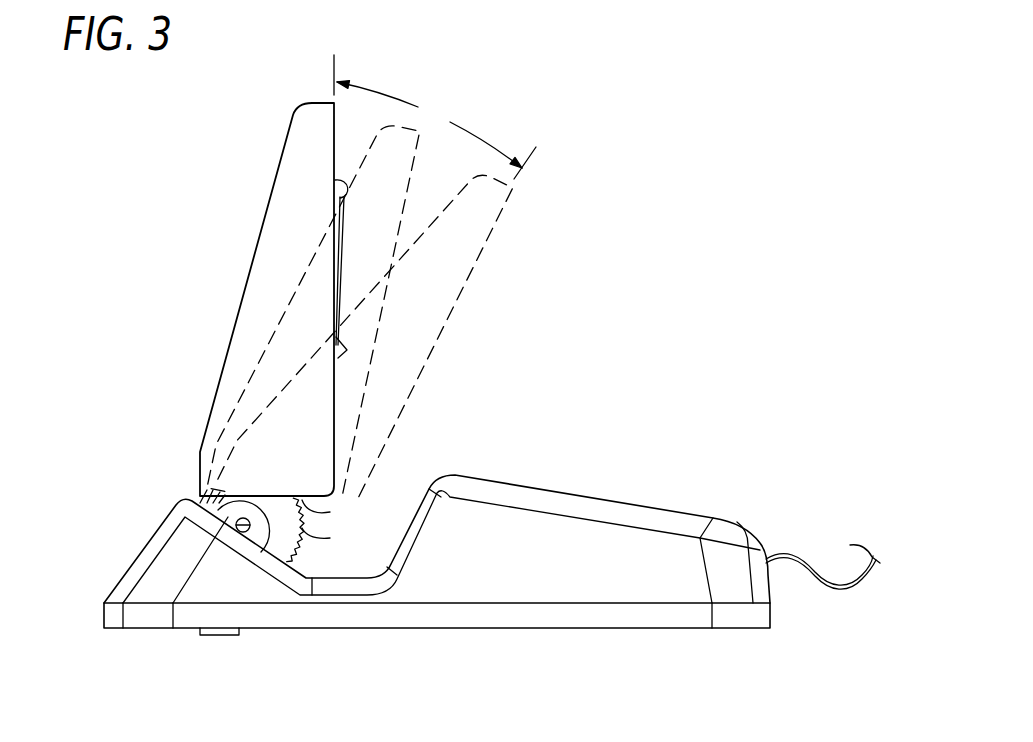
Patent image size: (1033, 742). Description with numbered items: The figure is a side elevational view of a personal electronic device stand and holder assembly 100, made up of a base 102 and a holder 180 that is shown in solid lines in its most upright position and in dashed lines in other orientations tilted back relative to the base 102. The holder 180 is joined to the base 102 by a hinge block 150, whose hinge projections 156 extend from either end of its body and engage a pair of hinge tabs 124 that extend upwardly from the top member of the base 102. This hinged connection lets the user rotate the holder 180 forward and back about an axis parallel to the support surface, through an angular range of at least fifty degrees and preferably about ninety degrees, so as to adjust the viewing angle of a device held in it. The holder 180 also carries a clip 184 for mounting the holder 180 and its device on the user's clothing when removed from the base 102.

The assembly 100 is at (156, 288).
The base 102 is at (126, 549).
The hinge tabs 124 is at (226, 523).
The hinge block 150 is at (189, 491).
The hinge projections 156 is at (261, 552).
The holder 180 is at (272, 172).
The clip 184 is at (345, 223).